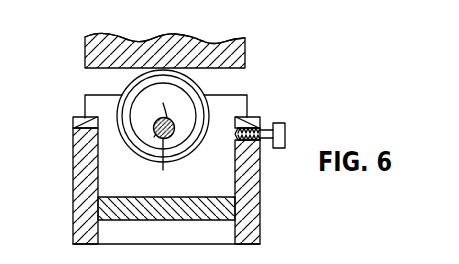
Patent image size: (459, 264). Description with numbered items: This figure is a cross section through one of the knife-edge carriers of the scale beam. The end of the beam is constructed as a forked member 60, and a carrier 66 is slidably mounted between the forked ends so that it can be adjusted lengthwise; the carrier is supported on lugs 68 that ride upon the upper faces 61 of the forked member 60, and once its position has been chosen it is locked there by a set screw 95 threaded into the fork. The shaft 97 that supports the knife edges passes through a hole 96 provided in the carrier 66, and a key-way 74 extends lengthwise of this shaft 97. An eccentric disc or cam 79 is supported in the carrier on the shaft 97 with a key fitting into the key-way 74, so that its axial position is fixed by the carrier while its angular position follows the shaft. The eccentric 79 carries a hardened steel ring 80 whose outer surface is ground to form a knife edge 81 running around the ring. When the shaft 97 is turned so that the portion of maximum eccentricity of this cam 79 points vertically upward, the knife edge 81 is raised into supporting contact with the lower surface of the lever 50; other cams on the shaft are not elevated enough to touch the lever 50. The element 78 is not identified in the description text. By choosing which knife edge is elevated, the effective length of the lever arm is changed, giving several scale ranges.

The lever 50 is at (156, 50).
The hardened steel ring 80 is at (208, 41).
The knife edge 81 is at (130, 78).
The eccentric or cam 79 is at (183, 99).
The lug 68 is at (238, 93).
The upper face 61 is at (75, 118).
The forked end of the beam 60 is at (80, 186).
The carrier 66 is at (197, 179).
The key-way 74 is at (157, 122).
The shaft 97 is at (164, 100).
The notch 78 is at (154, 137).
The hole 96 is at (160, 163).
The set screw 95 is at (288, 127).